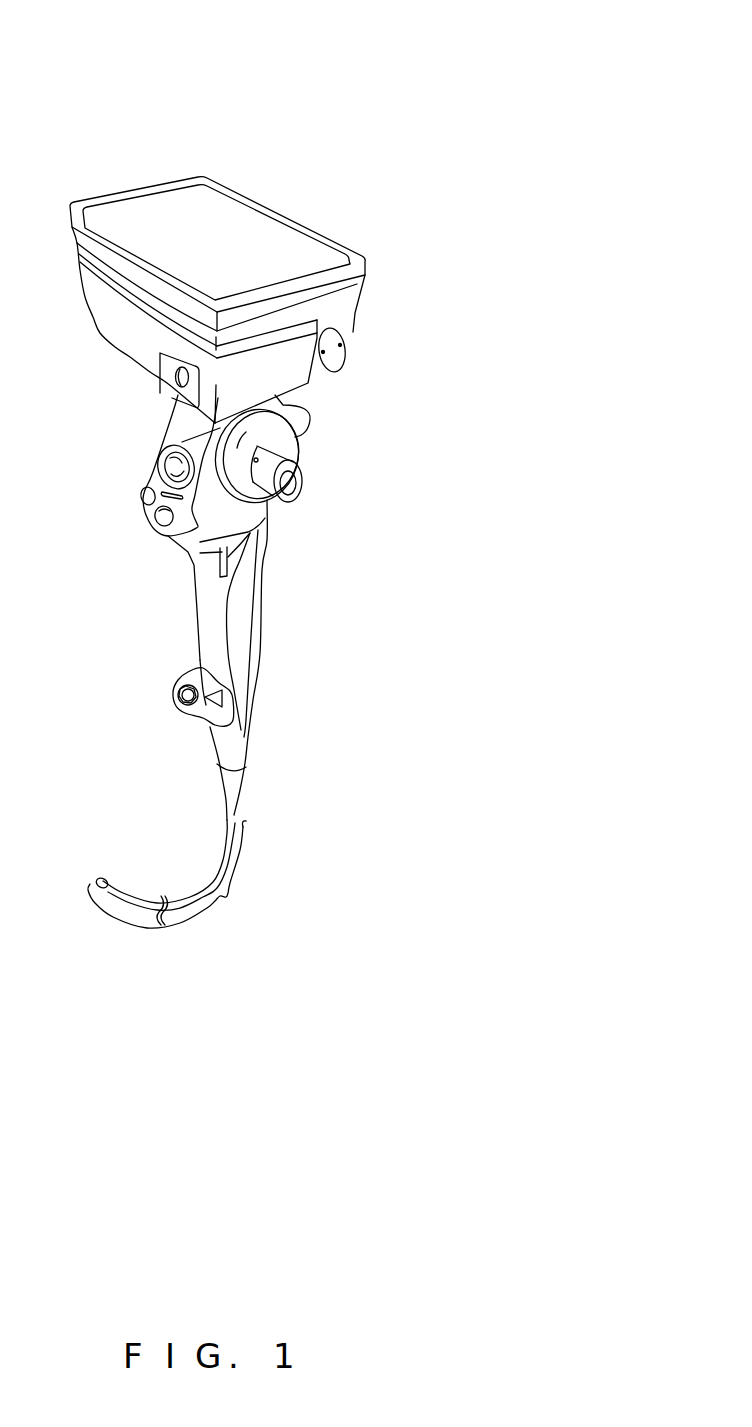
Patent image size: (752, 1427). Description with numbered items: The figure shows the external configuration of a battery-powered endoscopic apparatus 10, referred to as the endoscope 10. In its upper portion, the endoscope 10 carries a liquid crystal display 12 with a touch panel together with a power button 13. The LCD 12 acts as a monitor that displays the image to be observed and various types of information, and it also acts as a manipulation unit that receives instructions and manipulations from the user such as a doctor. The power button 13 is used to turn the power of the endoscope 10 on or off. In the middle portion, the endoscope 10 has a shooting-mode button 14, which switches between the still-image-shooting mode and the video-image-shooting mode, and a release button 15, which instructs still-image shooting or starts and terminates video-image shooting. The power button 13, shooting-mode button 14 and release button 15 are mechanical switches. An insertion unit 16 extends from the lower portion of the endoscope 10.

The battery-powered endoscopic apparatus 10 is at (358, 95).
The liquid crystal display with a touch panel 12 is at (133, 217).
The power button 13 is at (177, 375).
The shooting-mode button 14 is at (156, 523).
The release button 15 is at (141, 496).
The insertion unit 16 is at (176, 874).